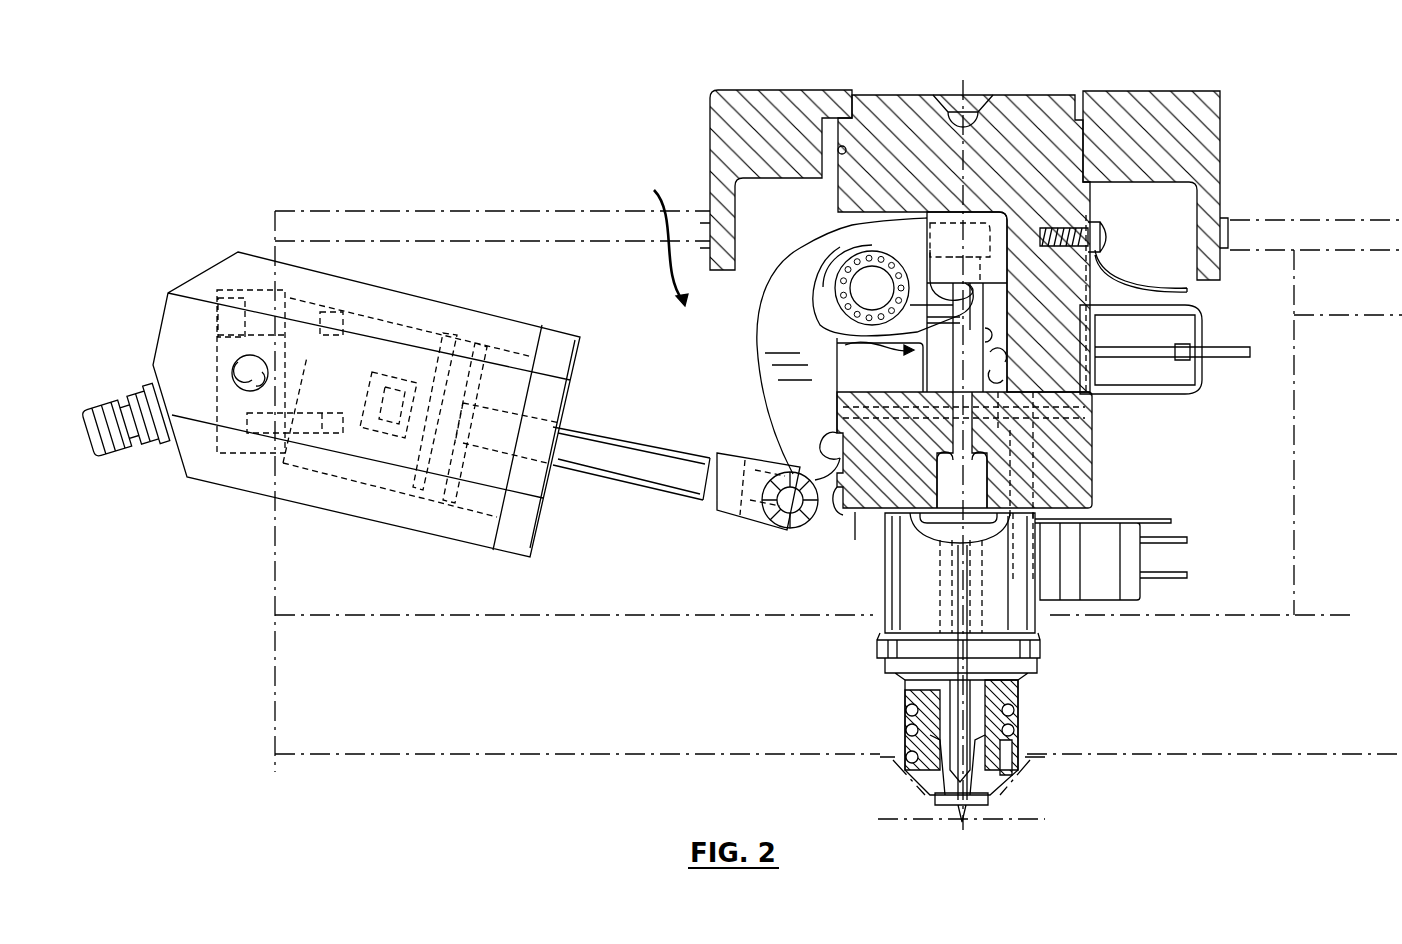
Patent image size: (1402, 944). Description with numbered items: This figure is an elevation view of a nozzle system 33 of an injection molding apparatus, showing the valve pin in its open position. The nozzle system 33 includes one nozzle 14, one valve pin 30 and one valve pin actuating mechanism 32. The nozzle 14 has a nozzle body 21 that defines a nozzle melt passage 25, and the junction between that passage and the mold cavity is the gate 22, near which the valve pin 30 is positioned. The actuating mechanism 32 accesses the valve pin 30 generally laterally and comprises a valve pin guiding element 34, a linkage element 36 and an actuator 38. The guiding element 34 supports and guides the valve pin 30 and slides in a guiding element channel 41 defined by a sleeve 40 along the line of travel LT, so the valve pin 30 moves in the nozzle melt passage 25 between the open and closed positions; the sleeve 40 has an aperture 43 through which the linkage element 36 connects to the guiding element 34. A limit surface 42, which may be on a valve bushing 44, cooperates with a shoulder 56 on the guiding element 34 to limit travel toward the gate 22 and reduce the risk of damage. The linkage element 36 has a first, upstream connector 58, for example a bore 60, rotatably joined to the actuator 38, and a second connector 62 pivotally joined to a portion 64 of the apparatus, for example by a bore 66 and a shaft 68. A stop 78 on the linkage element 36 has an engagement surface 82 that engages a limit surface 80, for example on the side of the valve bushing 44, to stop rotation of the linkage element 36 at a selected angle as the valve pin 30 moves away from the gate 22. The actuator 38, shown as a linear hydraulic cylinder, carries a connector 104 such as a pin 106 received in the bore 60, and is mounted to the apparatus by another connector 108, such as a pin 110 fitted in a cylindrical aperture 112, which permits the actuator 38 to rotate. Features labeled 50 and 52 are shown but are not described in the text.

The nozzle 14 is at (852, 90).
The nozzle body 21 is at (910, 607).
The gate 22 is at (958, 818).
The nozzle melt passage 25 is at (985, 472).
The valve pin 30 is at (1050, 450).
The valve pin actuating mechanism 32 is at (650, 235).
The nozzle system 33 is at (550, 176).
The valve pin guiding element 34 is at (985, 305).
The linkage element 36 is at (762, 370).
The actuator 38 is at (553, 488).
The sleeve 40 is at (1068, 418).
The guiding element channel 41 is at (1000, 334).
The limit surface 42 is at (998, 358).
The aperture 43 is at (862, 342).
The valve bushing 44 is at (1005, 384).
The screw 50 is at (1010, 262).
The pin block 52 is at (1012, 290).
The shoulder 56 is at (913, 358).
The first connector 58 is at (803, 522).
The bore 60 is at (795, 529).
The second connector 62 is at (886, 252).
The portion 64 is at (790, 332).
The bore 66 is at (836, 267).
The shaft 68 is at (838, 264).
The stop 78 is at (856, 515).
The limit surface 80 is at (820, 427).
The engagement surface 82 is at (827, 442).
The connector 104 is at (770, 512).
The pin 106 is at (773, 522).
The connector 108 is at (254, 392).
The pin 110 is at (265, 420).
The cylindrical aperture 112 is at (252, 366).